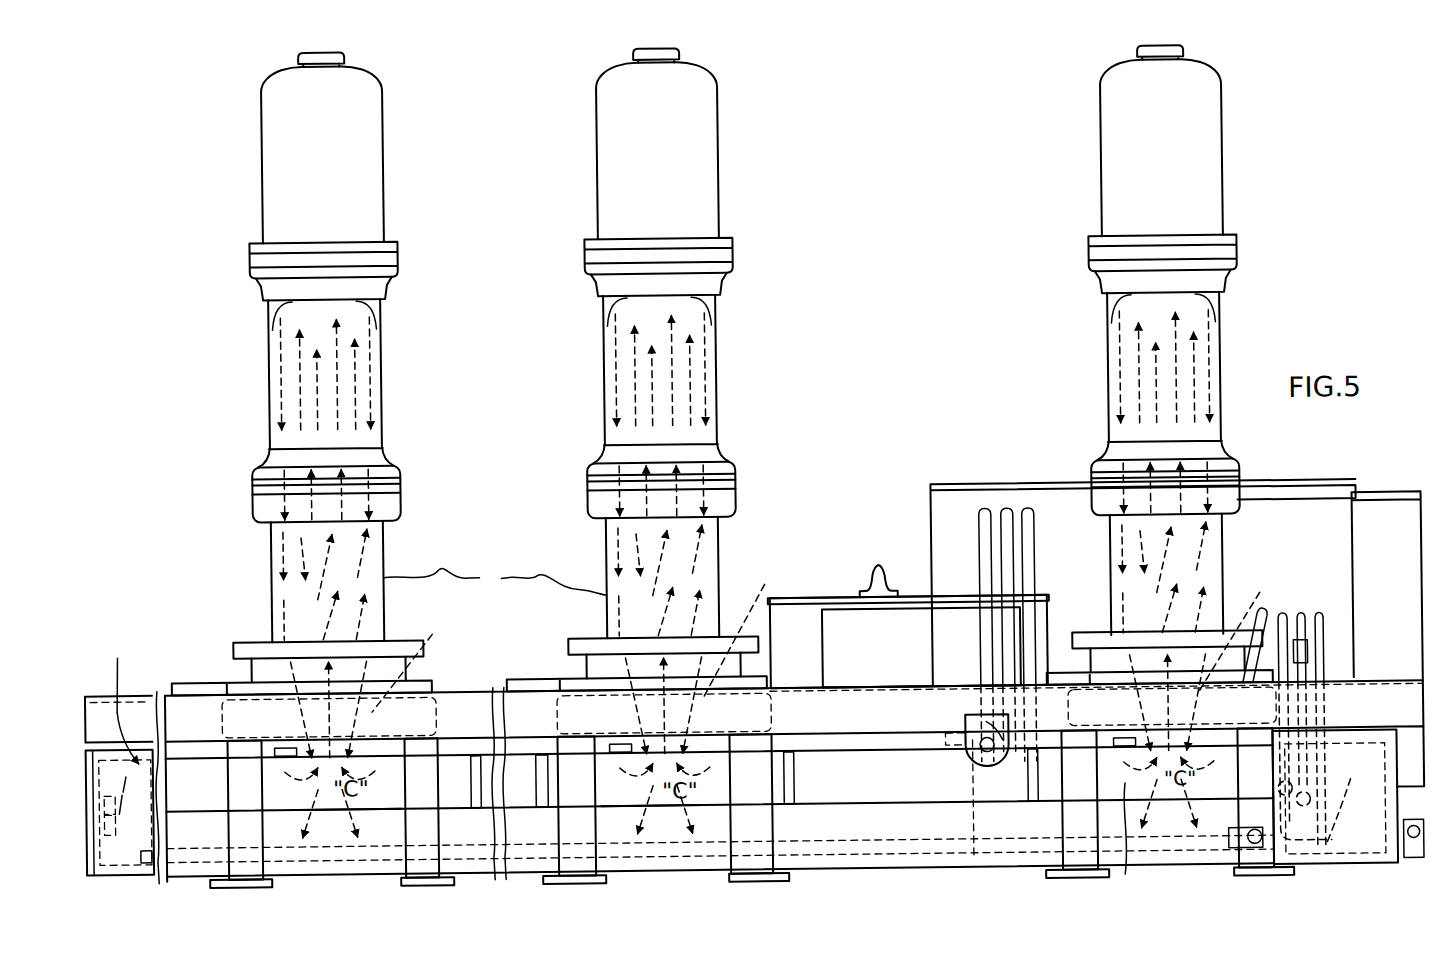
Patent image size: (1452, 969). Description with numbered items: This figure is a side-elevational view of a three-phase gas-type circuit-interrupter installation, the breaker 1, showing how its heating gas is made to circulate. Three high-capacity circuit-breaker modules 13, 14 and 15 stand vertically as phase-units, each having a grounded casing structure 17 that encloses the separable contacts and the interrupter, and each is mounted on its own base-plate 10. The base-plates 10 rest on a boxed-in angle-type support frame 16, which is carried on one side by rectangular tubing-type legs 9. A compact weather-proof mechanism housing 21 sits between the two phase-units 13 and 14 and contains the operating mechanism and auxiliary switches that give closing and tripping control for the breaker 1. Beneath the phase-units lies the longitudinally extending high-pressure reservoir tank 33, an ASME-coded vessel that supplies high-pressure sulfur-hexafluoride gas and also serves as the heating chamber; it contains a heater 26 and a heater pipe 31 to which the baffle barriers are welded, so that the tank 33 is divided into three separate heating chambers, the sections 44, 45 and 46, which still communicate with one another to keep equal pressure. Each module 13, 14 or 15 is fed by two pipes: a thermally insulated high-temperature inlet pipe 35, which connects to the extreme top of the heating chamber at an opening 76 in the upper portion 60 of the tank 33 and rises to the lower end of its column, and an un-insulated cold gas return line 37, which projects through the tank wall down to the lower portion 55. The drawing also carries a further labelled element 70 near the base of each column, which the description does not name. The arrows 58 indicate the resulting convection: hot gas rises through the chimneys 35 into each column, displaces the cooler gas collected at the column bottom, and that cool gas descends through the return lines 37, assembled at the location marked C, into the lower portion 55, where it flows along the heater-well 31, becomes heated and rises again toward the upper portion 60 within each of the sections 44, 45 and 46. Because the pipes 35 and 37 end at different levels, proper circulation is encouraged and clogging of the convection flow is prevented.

The breaker 1 is at (919, 450).
The rectangular tubing-type legs 9 is at (432, 835).
The base-plate 10 is at (430, 690).
The circuit-breaker module 13 is at (1072, 402).
The circuit-breaker module 14 is at (577, 399).
The circuit-breaker module 15 is at (226, 433).
The support frame 16 is at (240, 830).
The casing structure 17 is at (494, 582).
The mechanism housing 21 is at (910, 673).
The heater 26 is at (630, 862).
The heater pipe 31 is at (815, 845).
The high-pressure reservoir tank 33 is at (148, 856).
The high-temperature inlet pipe 35 is at (828, 633).
The cold gas return line 37 is at (300, 800).
The section 44 is at (356, 800).
The section 45 is at (638, 823).
The section 46 is at (1129, 837).
The lower portion 55 is at (845, 832).
The arrows 58 is at (385, 374).
The upper portion 60 is at (722, 764).
The valve 70 is at (352, 757).
The opening 76 is at (357, 757).